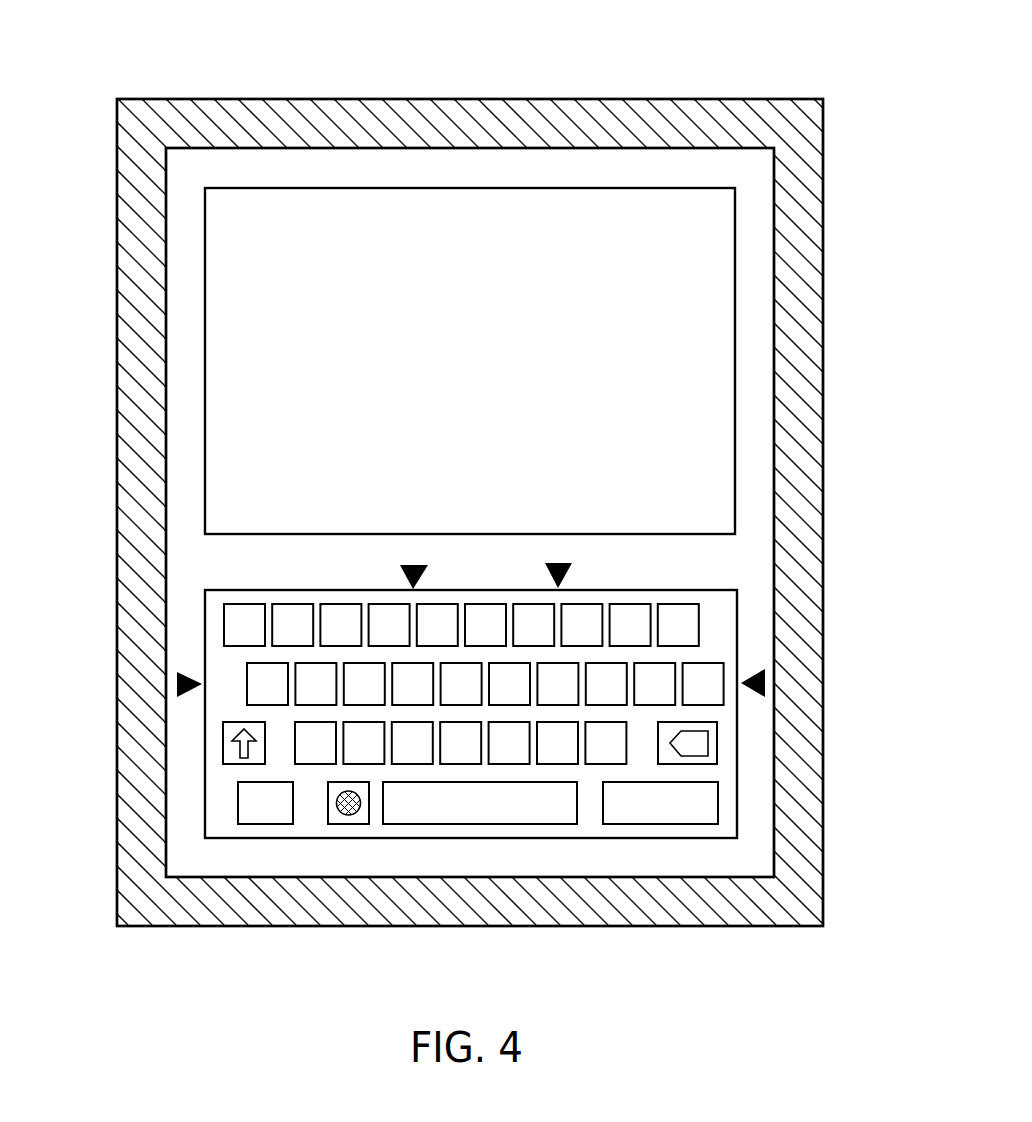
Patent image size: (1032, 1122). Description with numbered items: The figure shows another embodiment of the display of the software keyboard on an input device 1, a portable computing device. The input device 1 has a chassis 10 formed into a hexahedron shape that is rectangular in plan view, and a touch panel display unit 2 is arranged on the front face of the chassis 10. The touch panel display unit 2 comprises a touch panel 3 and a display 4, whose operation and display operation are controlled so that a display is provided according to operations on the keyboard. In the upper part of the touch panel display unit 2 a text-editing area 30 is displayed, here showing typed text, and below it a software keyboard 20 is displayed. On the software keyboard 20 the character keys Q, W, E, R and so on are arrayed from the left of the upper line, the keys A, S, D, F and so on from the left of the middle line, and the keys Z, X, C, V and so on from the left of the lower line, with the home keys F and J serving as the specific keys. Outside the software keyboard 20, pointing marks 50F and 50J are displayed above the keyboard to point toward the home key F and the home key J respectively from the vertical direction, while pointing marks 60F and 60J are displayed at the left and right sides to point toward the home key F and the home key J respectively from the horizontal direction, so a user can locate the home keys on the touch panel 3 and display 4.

The input device 1 is at (508, 58).
The touch panel display unit 2 is at (470, 461).
The touch panel 3 is at (470, 461).
The display 4 is at (636, 172).
The chassis 10 is at (747, 123).
The software keyboard 20 is at (711, 771).
The text-editing area 30 is at (711, 345).
The pointing mark 50F is at (400, 572).
The pointing mark 50J is at (572, 571).
The pointing mark 60F is at (177, 684).
The pointing mark 60J is at (765, 683).